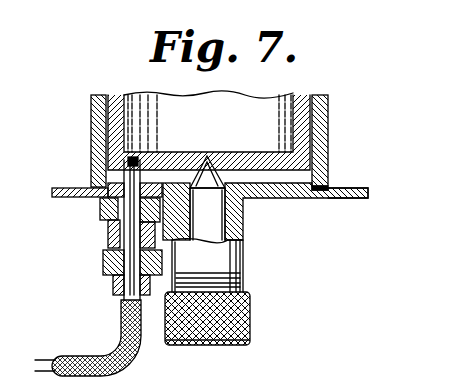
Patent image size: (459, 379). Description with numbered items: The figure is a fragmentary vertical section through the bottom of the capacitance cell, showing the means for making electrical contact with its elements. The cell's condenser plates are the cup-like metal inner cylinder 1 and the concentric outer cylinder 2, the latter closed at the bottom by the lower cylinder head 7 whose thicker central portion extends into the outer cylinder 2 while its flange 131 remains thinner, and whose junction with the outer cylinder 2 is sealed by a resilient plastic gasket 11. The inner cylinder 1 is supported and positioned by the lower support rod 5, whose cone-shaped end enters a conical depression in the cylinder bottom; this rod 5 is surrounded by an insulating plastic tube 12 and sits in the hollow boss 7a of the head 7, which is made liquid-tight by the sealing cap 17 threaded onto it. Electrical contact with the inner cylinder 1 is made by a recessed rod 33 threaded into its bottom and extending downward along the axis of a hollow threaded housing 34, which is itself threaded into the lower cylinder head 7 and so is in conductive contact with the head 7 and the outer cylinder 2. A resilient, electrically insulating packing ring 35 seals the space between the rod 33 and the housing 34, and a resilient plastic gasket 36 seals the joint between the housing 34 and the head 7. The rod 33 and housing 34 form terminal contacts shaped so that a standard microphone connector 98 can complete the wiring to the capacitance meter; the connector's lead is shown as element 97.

The inner cylinder 1 is at (270, 98).
The outer cylinder 2 is at (327, 133).
The support rod 5 is at (218, 157).
The lower cylinder head 7 is at (283, 198).
The hollow boss 7a is at (243, 268).
The gasket 11 is at (328, 188).
The plastic tube 12 is at (226, 231).
The sealing cap 17 is at (250, 340).
The recessed rod 33 is at (107, 176).
The hollow threaded housing 34 is at (107, 231).
The packing ring 35 is at (136, 160).
The gasket 36 is at (100, 204).
The flexible hose 97 is at (107, 356).
The microphone connector 98 is at (103, 262).
The flange 131 is at (347, 198).